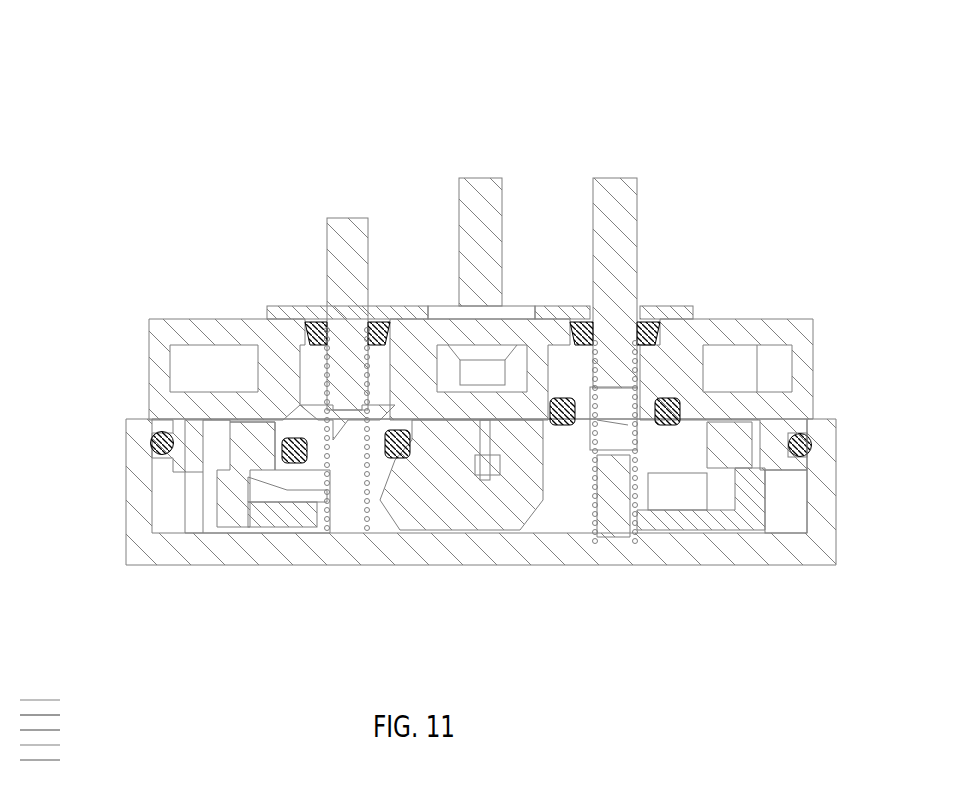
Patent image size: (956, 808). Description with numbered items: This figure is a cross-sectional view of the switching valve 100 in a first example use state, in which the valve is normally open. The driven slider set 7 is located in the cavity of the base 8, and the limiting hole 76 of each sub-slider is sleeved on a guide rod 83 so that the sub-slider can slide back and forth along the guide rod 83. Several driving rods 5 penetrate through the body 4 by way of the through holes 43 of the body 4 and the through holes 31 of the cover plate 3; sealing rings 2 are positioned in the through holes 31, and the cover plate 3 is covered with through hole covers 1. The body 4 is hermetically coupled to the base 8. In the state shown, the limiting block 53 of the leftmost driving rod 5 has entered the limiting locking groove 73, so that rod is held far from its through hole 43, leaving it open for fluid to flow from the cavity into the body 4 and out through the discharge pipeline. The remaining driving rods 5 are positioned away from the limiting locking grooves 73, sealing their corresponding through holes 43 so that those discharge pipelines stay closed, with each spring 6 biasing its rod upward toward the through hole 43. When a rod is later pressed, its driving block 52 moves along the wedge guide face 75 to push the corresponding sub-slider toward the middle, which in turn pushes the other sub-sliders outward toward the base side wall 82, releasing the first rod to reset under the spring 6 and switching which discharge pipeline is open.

The switching valve 100 is at (237, 63).
The through hole cover 1 is at (293, 307).
The sealing ring 2 is at (640, 320).
The cover plate 3 is at (168, 320).
The body 4 is at (150, 408).
The driving rod 5 is at (347, 218).
The spring 6 is at (333, 480).
The driven slider set 7 is at (213, 533).
The base 8 is at (128, 520).
The through hole 31 is at (595, 323).
The through hole 43 is at (300, 405).
The driving block 52 is at (392, 475).
The limiting block 53 is at (293, 470).
The limiting locking groove 73 is at (250, 493).
The wedge guide face 75 is at (403, 495).
The limiting hole 76 is at (658, 513).
The base side wall 82 is at (817, 490).
The guide rod 83 is at (608, 513).